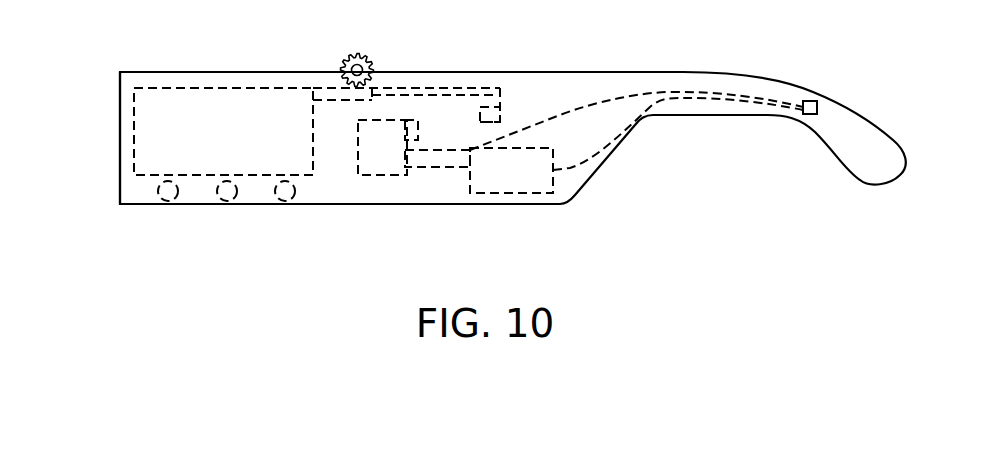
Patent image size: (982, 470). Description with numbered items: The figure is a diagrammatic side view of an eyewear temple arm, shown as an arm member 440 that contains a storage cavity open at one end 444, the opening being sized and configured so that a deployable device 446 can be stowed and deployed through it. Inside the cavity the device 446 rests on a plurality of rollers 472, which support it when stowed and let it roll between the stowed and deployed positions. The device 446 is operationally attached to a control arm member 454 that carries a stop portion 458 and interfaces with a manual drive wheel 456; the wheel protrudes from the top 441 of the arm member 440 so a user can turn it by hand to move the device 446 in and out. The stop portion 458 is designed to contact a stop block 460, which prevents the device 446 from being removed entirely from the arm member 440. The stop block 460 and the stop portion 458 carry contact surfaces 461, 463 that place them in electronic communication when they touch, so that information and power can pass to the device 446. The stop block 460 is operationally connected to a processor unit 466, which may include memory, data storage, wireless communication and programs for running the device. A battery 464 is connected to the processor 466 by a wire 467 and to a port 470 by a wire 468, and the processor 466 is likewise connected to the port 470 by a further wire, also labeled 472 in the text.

The arm member 440 is at (622, 72).
The top of the arm member 441 is at (553, 72).
The open end of the storage cavity 444 is at (120, 100).
The deployable device 446 is at (228, 88).
The control arm member 454 is at (399, 88).
The manual drive wheel 456 is at (353, 54).
The stop portion 458 is at (500, 107).
The stop block 460 is at (404, 130).
The contact surface 461 is at (478, 107).
The contact surface 463 is at (420, 130).
The battery 464 is at (510, 194).
The processor unit 466 is at (367, 176).
The wire 467 is at (431, 168).
The wire 468 is at (666, 102).
The port 470 is at (812, 101).
The rollers 472 is at (157, 205).